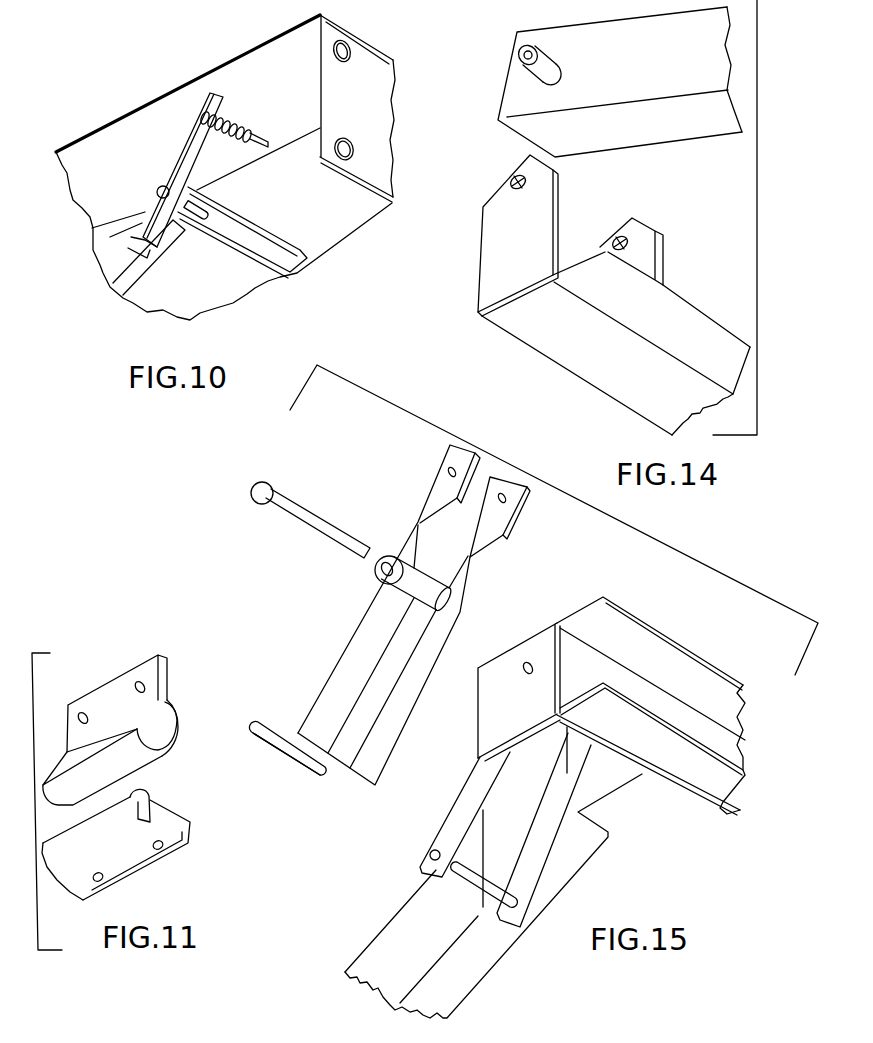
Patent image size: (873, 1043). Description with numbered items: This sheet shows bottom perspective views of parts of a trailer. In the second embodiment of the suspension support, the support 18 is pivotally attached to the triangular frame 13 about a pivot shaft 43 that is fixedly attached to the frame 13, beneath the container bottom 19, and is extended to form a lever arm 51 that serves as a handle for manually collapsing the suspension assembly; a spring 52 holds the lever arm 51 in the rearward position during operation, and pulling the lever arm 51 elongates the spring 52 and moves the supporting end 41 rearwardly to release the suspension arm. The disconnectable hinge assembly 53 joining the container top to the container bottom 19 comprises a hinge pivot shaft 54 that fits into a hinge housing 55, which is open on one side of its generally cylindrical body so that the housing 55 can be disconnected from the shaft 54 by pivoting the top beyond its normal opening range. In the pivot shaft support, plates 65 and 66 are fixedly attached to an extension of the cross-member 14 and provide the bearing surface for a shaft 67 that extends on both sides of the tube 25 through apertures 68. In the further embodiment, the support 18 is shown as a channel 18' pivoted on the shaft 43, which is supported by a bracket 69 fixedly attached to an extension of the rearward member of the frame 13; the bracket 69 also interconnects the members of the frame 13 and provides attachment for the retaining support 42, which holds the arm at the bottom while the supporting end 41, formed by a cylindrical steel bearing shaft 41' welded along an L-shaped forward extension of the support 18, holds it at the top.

In FIG. 10, the triangular frame 13 is at (252, 268).
In FIG. 15, the triangular frame 13 is at (637, 623).
In FIG. 14, the cross-member 14 is at (577, 348).
In FIG. 15, the suspension support 18 is at (383, 615).
In FIG. 15, the channel 18' is at (500, 530).
In FIG. 10, the container bottom 19 is at (90, 148).
In FIG. 14, the tube 25 is at (678, 123).
In FIG. 15, the supporting end 41 is at (287, 722).
In FIG. 15, the bearing shaft 41' is at (283, 759).
In FIG. 15, the retaining support 42 is at (457, 878).
In FIG. 10, the pivot shaft 43 is at (207, 202).
In FIG. 15, the pivot shaft 43 is at (310, 515).
In FIG. 10, the lever arm 51 is at (212, 112).
In FIG. 10, the spring 52 is at (233, 123).
In FIG. 11, the disconnectable hinge assembly 53 is at (197, 759).
In FIG. 11, the hinge pivot shaft 54 is at (65, 867).
In FIG. 11, the hinge housing 55 is at (180, 718).
In FIG. 14, the plate 65 is at (508, 238).
In FIG. 14, the plate 66 is at (643, 240).
In FIG. 14, the shaft 67 is at (513, 52).
In FIG. 14, the apertures 68 is at (508, 173).
In FIG. 15, the bracket 69 is at (503, 807).